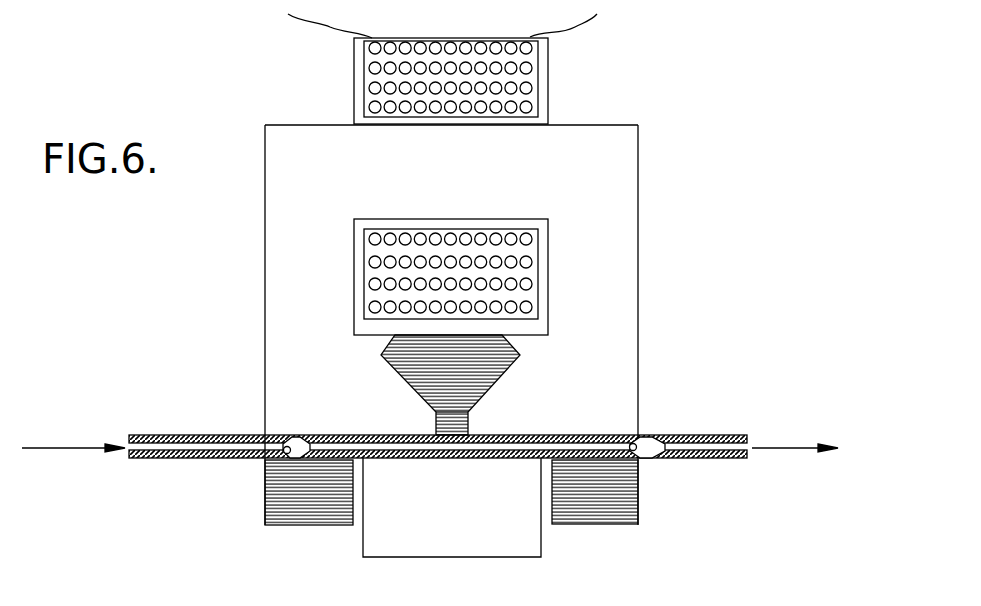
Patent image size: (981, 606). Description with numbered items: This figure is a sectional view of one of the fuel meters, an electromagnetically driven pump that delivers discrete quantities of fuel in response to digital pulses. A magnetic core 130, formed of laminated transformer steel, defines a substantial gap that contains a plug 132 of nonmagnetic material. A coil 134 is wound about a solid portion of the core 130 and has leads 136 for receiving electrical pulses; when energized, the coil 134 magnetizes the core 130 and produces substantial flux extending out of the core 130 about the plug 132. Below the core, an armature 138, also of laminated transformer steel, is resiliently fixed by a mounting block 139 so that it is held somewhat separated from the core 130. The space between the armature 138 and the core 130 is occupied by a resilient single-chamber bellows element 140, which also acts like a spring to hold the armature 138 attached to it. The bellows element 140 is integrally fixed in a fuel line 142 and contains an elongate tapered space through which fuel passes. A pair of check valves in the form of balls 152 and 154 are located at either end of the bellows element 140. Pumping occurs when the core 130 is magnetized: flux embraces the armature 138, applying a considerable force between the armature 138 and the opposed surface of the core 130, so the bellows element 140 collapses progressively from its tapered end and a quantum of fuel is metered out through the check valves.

The magnetic core 130 is at (625, 210).
The plug 132 is at (497, 360).
The coil 134 is at (530, 92).
The leads 136 is at (332, 28).
The armature 138 is at (511, 550).
The mounting block 139 is at (616, 517).
The bellows element 140 is at (510, 436).
The fuel line 142 is at (196, 400).
The ball 152 is at (298, 438).
The ball 154 is at (640, 436).